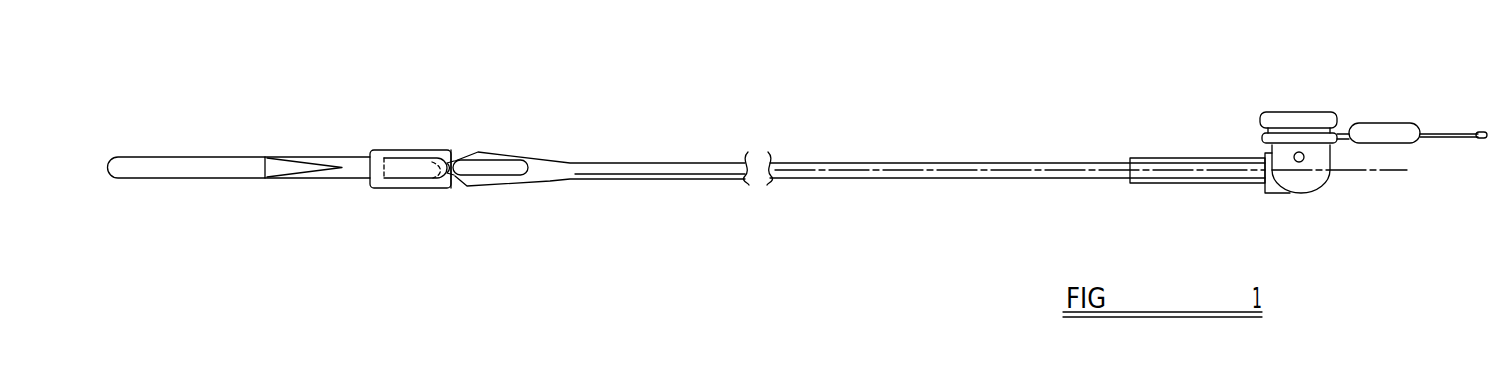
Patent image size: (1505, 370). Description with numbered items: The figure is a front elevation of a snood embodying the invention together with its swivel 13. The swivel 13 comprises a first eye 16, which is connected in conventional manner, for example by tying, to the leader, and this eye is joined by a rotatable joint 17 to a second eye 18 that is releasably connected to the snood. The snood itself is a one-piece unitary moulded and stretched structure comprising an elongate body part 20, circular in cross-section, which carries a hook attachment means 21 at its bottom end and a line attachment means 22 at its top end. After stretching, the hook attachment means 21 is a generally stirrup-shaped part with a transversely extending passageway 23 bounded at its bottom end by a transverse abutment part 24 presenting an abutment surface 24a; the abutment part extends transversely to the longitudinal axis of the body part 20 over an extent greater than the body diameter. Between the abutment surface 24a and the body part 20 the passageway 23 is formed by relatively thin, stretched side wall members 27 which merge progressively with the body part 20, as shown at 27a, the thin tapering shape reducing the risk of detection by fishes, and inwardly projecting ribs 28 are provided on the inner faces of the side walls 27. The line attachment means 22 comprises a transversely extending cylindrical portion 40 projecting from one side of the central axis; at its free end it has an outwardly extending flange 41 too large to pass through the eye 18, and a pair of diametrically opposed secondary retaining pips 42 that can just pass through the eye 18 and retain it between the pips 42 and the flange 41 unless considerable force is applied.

The swivel 13 is at (1400, 181).
The first eye 16 is at (1482, 132).
The rotatable joint 17 is at (1370, 117).
The second eye 18 is at (1340, 140).
The body part 20 is at (1262, 196).
The hook attachment means 21 is at (471, 124).
The line attachment means 22 is at (1270, 108).
The passageway 23 is at (462, 160).
The transverse abutment part 24 is at (410, 151).
The abutment surface 24a is at (423, 190).
The side wall members 27 is at (478, 153).
The merging portion of side wall member 27a is at (635, 95).
The inwardly projecting ribs 28 is at (450, 151).
The transversely extending portion 40 is at (1317, 173).
The flange 41 is at (1339, 120).
The secondary retaining pips 42 is at (1296, 162).